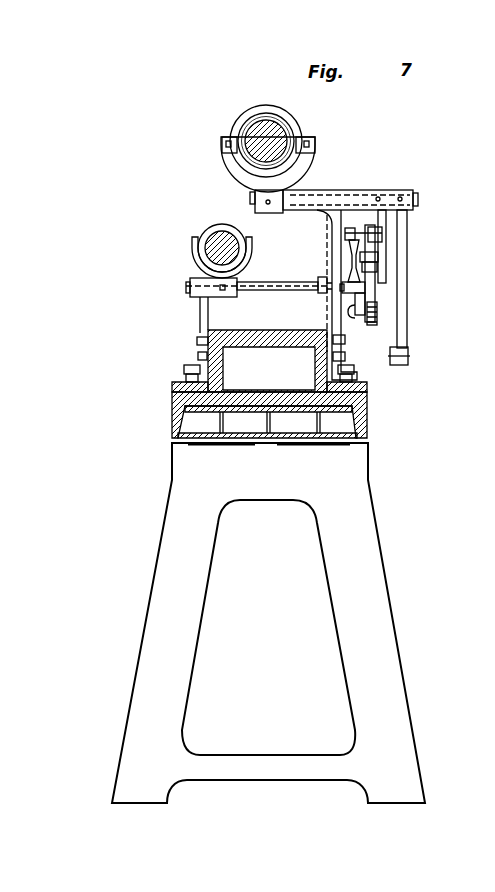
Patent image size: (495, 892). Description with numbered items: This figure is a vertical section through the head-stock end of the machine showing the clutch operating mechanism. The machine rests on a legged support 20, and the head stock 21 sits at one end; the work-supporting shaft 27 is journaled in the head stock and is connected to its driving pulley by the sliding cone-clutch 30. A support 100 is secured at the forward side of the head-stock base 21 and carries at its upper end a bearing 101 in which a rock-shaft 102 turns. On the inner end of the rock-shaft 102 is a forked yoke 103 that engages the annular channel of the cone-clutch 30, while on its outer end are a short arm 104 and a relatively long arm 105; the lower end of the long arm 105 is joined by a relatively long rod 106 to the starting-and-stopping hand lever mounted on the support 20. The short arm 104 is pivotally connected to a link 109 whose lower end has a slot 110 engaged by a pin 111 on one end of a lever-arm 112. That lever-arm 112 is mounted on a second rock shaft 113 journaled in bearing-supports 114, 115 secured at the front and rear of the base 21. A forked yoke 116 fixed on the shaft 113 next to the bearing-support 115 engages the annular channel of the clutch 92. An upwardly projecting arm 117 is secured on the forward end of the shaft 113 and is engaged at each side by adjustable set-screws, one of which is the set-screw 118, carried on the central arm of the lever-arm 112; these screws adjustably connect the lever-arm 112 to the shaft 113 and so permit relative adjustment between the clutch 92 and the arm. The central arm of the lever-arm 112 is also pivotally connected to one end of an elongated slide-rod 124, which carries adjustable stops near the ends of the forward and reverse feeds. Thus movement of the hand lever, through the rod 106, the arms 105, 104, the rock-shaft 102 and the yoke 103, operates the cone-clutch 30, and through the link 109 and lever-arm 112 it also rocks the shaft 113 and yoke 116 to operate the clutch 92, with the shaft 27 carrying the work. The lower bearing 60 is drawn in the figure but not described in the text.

The legged support 20 is at (368, 410).
The head stock 21 is at (200, 342).
The work-supporting shaft 27 is at (268, 126).
The sliding cone-clutch 30 is at (288, 124).
The bearing 60 is at (209, 228).
The clutch 92 is at (222, 224).
The support 100 is at (332, 246).
The bearing 101 is at (343, 181).
The rock-shaft 102 is at (289, 208).
The forked yoke 103 is at (318, 152).
The short arm 104 is at (386, 223).
The long arm 105 is at (407, 283).
The rod 106 is at (393, 367).
The link 109 is at (378, 302).
The slot 110 is at (378, 322).
The pin 111 is at (378, 313).
The lever-arm 112 is at (360, 306).
The rock shaft 113 is at (322, 297).
The bearing-support 114 is at (310, 328).
The bearing-support 115 is at (202, 312).
The forked yoke 116 is at (250, 270).
The upwardly projecting arm 117 is at (378, 257).
The set-screw 118 is at (378, 266).
The slide-rod 124 is at (352, 230).